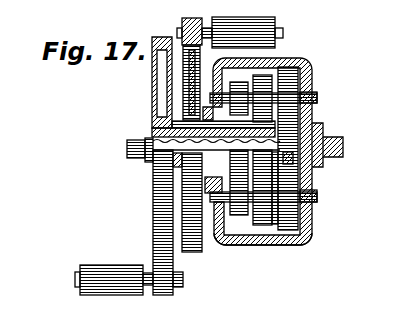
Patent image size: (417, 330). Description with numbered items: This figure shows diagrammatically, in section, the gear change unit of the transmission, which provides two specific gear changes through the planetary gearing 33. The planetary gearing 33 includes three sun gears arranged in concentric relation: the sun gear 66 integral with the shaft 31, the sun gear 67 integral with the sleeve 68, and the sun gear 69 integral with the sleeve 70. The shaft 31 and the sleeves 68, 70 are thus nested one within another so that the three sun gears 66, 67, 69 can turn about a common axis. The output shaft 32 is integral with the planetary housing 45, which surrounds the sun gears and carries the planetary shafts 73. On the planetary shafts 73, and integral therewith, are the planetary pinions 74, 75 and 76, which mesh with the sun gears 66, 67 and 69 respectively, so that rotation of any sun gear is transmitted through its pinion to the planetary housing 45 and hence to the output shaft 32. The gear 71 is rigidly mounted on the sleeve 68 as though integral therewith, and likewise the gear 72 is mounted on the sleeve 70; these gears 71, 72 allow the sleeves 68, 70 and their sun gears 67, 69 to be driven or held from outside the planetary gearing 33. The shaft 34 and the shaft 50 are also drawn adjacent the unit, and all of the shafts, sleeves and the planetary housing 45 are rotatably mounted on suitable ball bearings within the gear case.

The shaft 31 is at (130, 150).
The output shaft 32 is at (343, 147).
The planetary gearing 33 is at (311, 63).
The drive shaft 34 is at (283, 33).
The planetary housing 45 is at (336, 114).
The output shaft 50 is at (117, 265).
The sun gear 66 is at (293, 156).
The sun gear 67 is at (275, 170).
The sleeve 68 is at (175, 155).
The sun gear 69 is at (245, 180).
The sleeve 70 is at (175, 125).
The gear 71 is at (163, 97).
The gear 72 is at (193, 252).
The planetary shafts 73 is at (317, 97).
The planetary pinion 74 is at (309, 240).
The planetary pinion 75 is at (267, 226).
The planetary pinion 76 is at (238, 215).